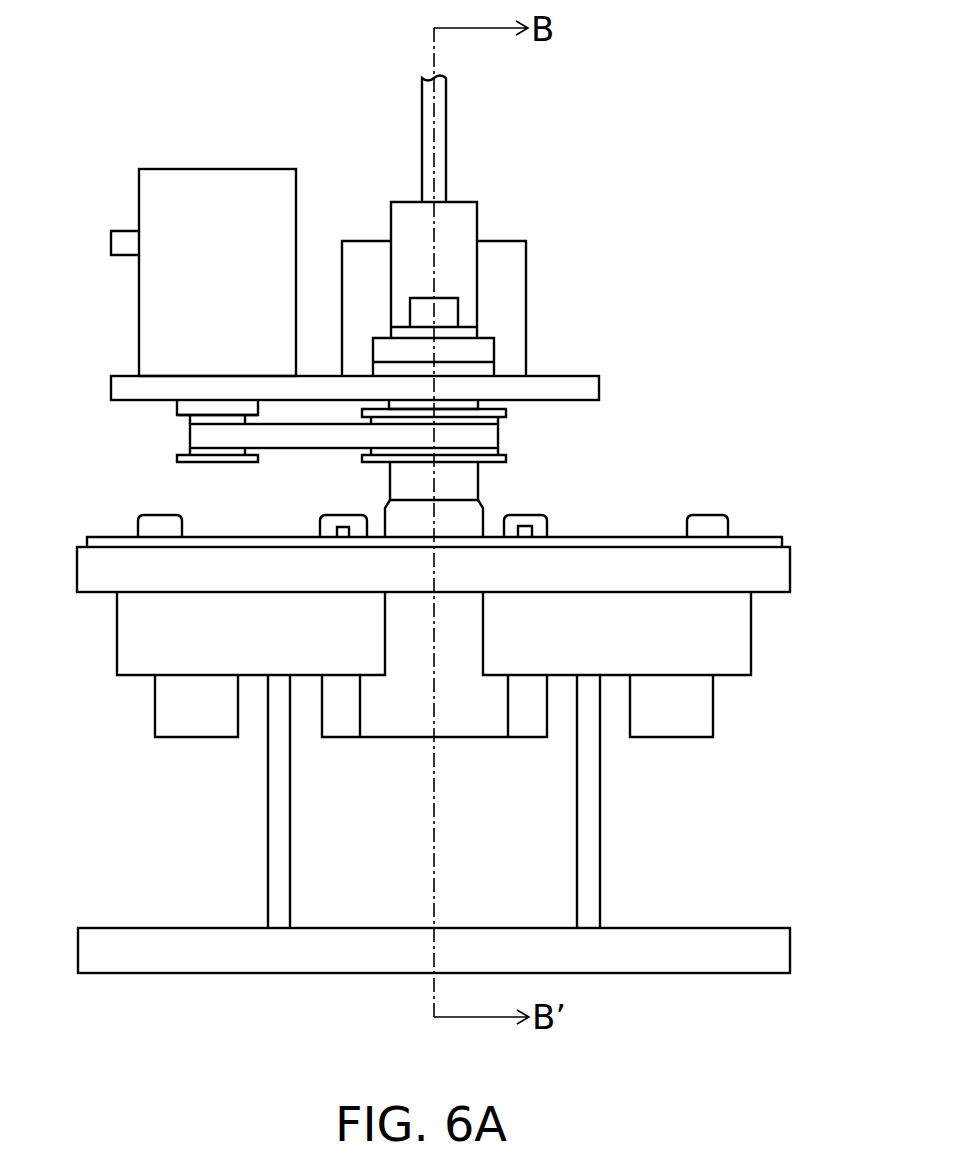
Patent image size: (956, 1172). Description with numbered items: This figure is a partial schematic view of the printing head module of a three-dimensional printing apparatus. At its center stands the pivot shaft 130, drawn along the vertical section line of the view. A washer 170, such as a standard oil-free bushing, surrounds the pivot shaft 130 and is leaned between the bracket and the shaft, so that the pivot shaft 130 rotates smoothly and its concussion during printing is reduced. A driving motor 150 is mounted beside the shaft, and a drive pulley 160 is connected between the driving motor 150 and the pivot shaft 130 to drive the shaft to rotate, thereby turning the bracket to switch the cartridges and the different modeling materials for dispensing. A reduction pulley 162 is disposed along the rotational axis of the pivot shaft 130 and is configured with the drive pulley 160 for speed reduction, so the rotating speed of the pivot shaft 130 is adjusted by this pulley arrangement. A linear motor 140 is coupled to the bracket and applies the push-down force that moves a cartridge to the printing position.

The pivot shaft 130 is at (478, 478).
The linear motor 140 is at (503, 289).
The driving motor 150 is at (222, 196).
The drive pulley 160 is at (188, 435).
The reduction pulley 162 is at (490, 452).
The washer 170 is at (470, 368).